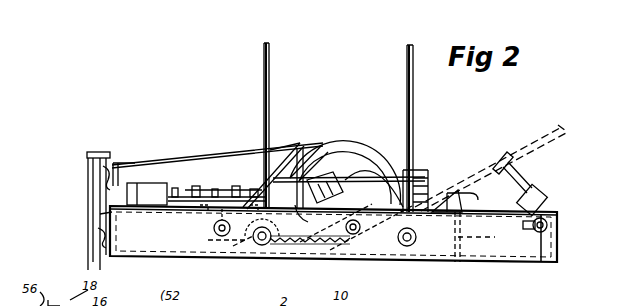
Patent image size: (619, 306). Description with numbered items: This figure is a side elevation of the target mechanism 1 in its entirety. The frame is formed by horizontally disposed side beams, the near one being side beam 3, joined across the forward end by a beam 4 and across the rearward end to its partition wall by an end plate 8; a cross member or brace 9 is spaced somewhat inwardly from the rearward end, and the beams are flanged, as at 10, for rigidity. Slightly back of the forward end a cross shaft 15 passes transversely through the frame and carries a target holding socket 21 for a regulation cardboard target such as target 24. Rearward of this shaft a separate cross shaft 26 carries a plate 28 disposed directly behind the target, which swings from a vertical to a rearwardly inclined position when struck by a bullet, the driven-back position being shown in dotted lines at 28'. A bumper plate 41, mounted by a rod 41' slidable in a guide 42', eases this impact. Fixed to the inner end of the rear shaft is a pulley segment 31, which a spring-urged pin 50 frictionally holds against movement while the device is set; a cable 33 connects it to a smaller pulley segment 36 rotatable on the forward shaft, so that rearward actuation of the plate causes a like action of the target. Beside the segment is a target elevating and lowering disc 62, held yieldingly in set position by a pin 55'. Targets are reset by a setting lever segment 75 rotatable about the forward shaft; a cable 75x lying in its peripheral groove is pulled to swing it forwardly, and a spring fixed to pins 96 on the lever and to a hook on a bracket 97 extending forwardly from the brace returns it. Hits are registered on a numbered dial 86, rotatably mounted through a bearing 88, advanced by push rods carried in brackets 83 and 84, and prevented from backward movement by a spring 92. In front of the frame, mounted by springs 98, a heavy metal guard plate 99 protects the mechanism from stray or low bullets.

The target mechanism 1 is at (326, 124).
The side beam 3 is at (540, 247).
The beam 4 is at (100, 214).
The end plate 8 is at (555, 232).
The cross member or brace 9 is at (478, 238).
The flange 10 is at (502, 208).
The cross shaft 15 is at (262, 246).
The target holding socket 21 is at (303, 187).
The cardboard target 24 is at (269, 66).
The cross shaft 26 is at (408, 247).
The plate 28 is at (389, 125).
The plate in driven-back position 28' is at (506, 168).
The pulley segment 31 is at (388, 172).
The cable 33 is at (304, 150).
The pulley segment 36 is at (300, 185).
The bumper plate 41 is at (497, 156).
The rod 41' is at (535, 177).
The guide 42' is at (549, 208).
The pin 50 is at (356, 236).
The pin 55' is at (199, 239).
The disk segment 62 is at (305, 196).
The setting lever segment 75 is at (340, 165).
The cable 75x is at (208, 158).
The bracket 83 is at (266, 152).
The bracket 84 is at (125, 183).
The registering dial 86 is at (222, 186).
The bearing 88 is at (213, 226).
The spring 92 is at (150, 206).
The pin 96 is at (300, 242).
The bracket 97 is at (450, 192).
The spring 98 is at (100, 176).
The guard plate 99 is at (88, 190).